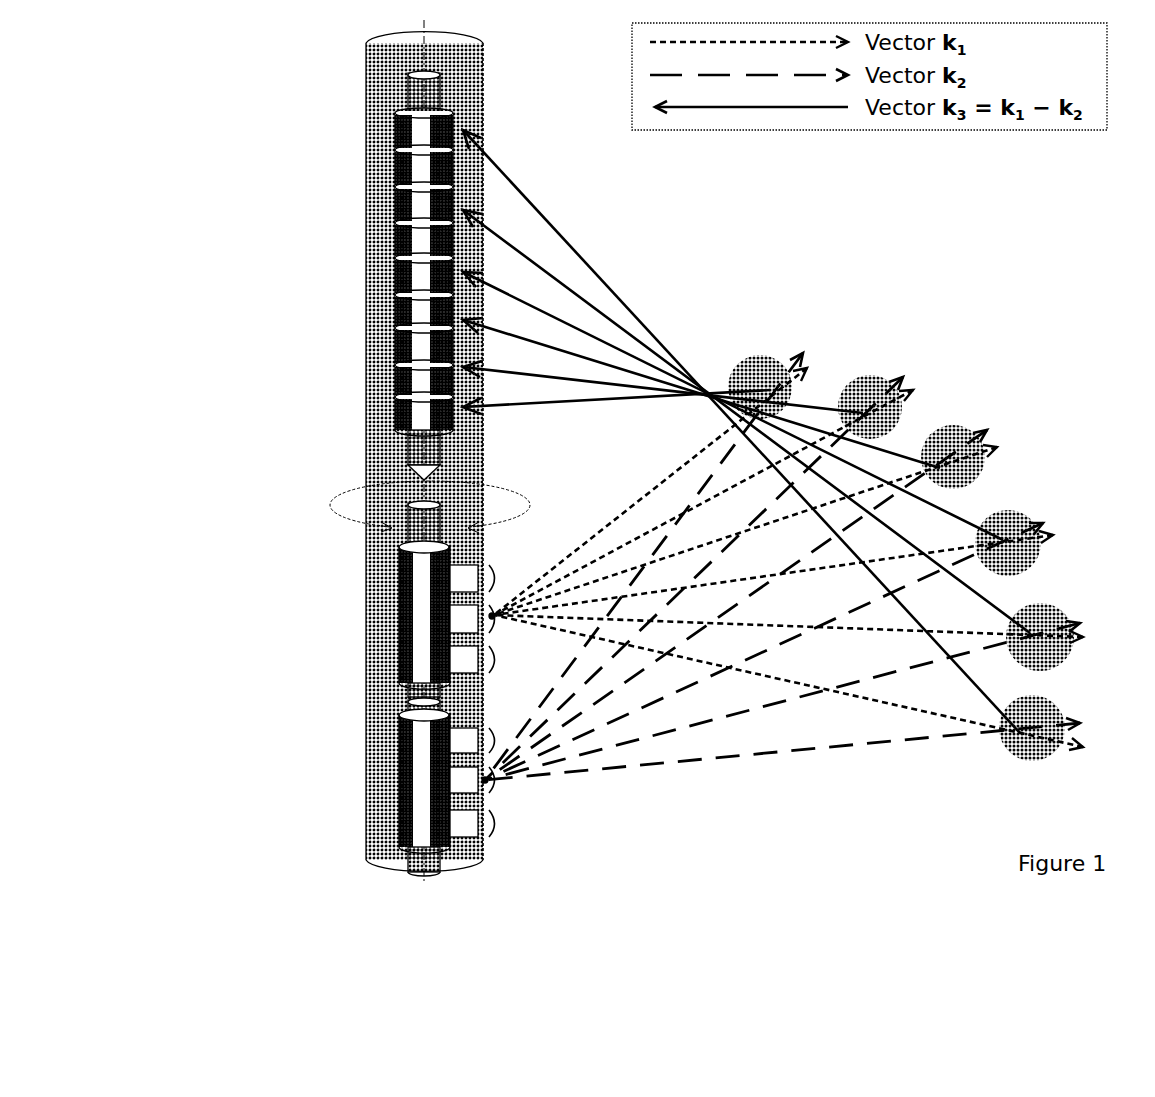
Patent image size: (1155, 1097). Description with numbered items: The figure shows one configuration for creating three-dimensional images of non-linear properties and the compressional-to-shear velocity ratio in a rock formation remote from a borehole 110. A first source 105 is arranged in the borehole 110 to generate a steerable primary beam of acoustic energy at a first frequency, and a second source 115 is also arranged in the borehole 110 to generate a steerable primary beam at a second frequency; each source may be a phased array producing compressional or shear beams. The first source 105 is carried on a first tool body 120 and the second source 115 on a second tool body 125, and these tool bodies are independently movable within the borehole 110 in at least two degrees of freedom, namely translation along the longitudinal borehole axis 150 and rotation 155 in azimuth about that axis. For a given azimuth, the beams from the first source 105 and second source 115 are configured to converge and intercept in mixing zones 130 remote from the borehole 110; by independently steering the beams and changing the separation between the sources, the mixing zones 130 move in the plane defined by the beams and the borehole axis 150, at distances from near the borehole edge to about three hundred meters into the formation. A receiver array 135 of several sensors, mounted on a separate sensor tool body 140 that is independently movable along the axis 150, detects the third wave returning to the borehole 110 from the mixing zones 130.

The borehole 110 is at (383, 62).
The sensor tool body 140 is at (415, 95).
The receiver array 135 is at (387, 428).
The longitudinal axis 150 is at (424, 478).
The rotation 155 is at (428, 483).
The second tool body 125 is at (415, 536).
The second source 115 is at (401, 568).
The first source 105 is at (420, 781).
The first tool body 120 is at (418, 856).
The mixing zones 130 is at (940, 467).